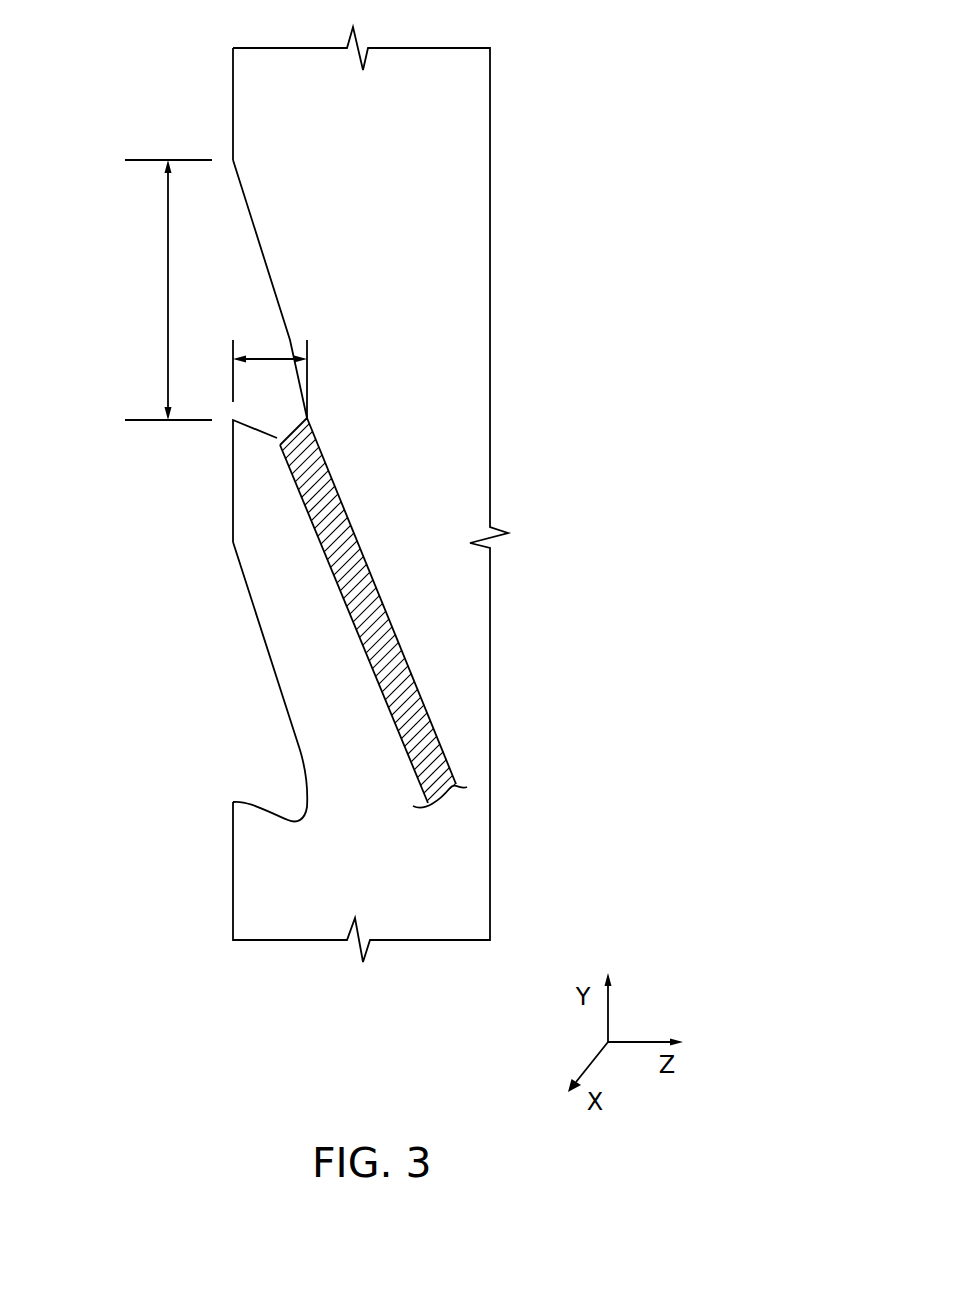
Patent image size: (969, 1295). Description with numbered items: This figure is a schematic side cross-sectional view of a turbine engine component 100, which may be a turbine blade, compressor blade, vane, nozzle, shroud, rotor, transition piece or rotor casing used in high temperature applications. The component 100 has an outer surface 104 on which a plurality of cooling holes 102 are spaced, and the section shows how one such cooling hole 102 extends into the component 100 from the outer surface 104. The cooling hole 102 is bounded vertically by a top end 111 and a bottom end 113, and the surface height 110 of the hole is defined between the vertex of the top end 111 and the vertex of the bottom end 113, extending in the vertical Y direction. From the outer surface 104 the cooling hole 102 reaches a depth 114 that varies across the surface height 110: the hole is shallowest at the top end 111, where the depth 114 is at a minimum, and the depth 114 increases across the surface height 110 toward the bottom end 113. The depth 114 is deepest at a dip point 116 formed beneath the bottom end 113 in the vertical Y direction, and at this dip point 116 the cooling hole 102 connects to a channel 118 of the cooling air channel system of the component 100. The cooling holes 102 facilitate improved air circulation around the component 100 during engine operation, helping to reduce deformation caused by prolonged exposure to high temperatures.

The turbine engine component 100 is at (592, 70).
The cooling hole 102 is at (283, 305).
The outer surface 104 is at (233, 63).
The surface height 110 is at (168, 256).
The top end 111 is at (233, 158).
The bottom end 113 is at (233, 420).
The depth 114 is at (272, 360).
The dip point 116 is at (277, 438).
The channel 118 is at (362, 613).